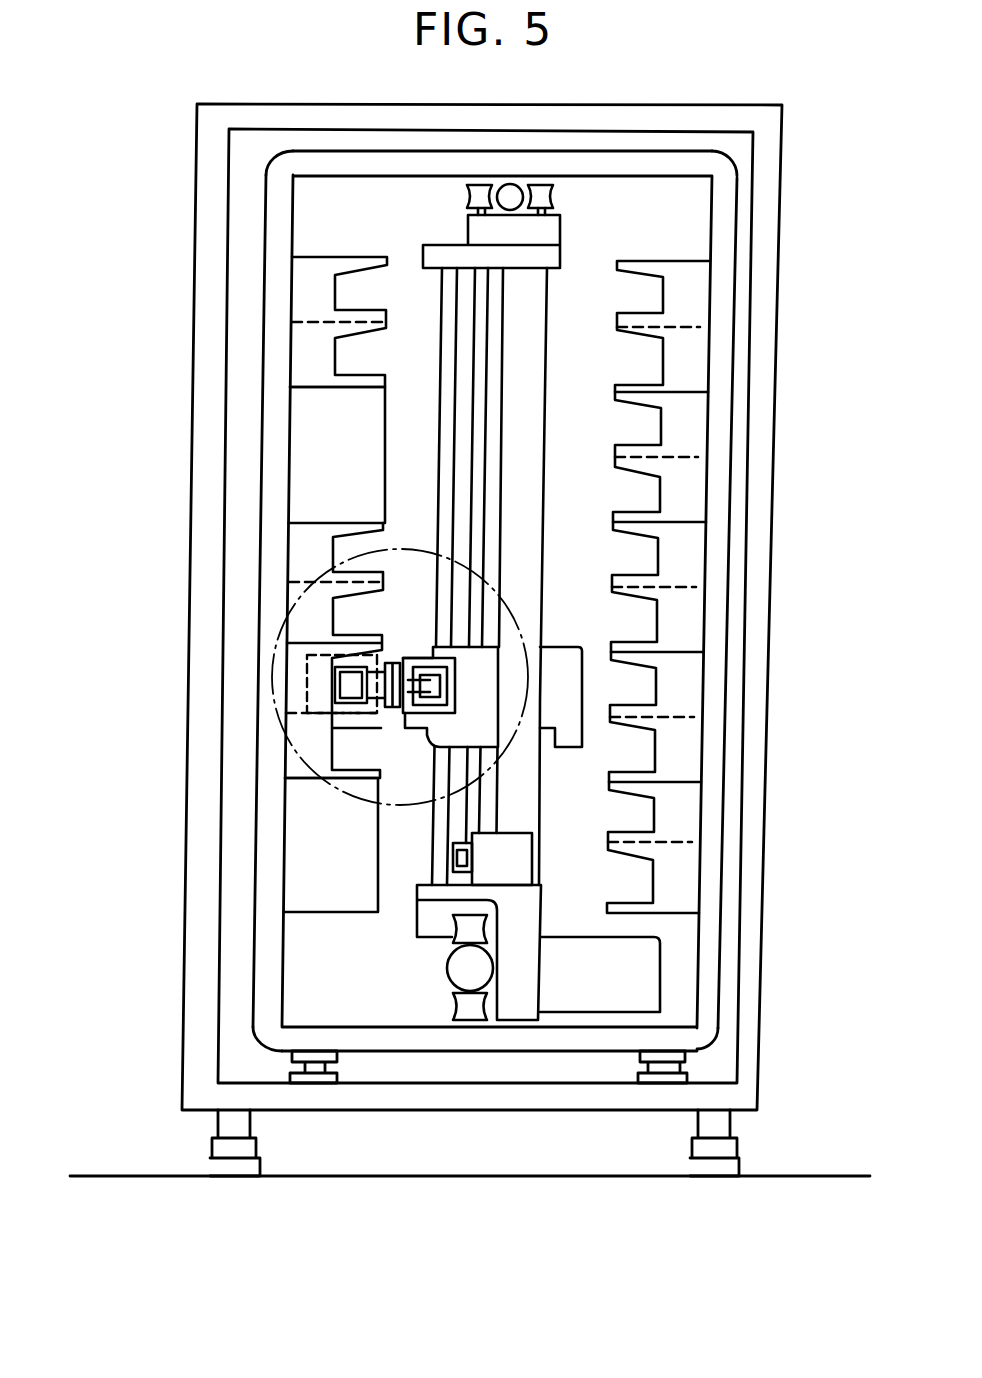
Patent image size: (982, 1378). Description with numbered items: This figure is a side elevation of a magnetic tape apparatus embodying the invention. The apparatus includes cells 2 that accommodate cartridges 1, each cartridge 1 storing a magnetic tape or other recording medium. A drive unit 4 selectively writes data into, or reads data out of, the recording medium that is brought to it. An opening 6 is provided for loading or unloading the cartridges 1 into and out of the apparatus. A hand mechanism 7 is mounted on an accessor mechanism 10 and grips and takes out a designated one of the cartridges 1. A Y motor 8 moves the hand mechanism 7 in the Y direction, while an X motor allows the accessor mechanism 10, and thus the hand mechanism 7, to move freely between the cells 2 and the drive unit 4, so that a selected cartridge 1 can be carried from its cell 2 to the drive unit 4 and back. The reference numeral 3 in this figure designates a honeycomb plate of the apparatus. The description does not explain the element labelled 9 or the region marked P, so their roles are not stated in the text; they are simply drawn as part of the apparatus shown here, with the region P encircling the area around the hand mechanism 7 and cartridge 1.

The cartridge 1 is at (317, 678).
The cell 2 is at (297, 658).
The honeycomb plate 3 is at (273, 512).
The drive unit 4 is at (303, 882).
The opening 6 is at (326, 410).
The hand mechanism 7 is at (448, 730).
The Y motor 8 is at (525, 866).
The control unit 9 is at (638, 962).
The accessor mechanism 10 is at (522, 1021).
The detail region P is at (503, 610).